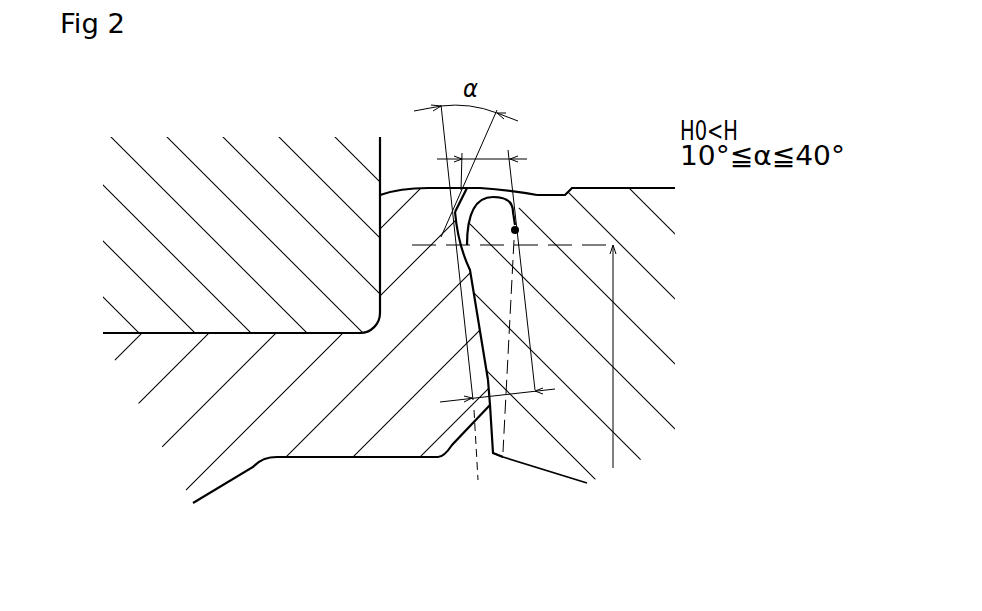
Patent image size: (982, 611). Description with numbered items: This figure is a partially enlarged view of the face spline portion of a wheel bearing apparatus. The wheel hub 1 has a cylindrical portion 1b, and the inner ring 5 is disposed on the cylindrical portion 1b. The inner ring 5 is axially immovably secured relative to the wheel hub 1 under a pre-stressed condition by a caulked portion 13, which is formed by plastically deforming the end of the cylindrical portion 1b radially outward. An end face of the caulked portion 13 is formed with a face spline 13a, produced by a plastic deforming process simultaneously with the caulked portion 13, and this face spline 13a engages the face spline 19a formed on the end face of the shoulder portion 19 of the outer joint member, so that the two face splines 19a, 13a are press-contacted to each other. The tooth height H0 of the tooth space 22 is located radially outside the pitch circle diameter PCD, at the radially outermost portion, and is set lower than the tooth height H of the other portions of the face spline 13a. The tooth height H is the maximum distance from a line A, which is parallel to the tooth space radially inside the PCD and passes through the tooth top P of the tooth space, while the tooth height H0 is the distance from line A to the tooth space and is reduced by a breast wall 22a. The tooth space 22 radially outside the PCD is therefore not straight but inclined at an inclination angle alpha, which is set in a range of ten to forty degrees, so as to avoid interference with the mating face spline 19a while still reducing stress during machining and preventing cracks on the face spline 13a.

The wheel hub 1 is at (140, 380).
The cylindrical portion 1b is at (266, 333).
The inner ring 5 is at (224, 172).
The caulked portion 13 is at (410, 283).
The face spline 13a is at (476, 290).
The shoulder portion 19 is at (575, 232).
The face spline 19a is at (477, 482).
The tooth space 22 is at (480, 367).
The breast wall 22a is at (460, 188).
The tooth top P is at (519, 228).
The line A is at (503, 188).
The tooth height H is at (493, 391).
The tooth height H0 is at (482, 142).
The pitch circle diameter PCD is at (542, 389).